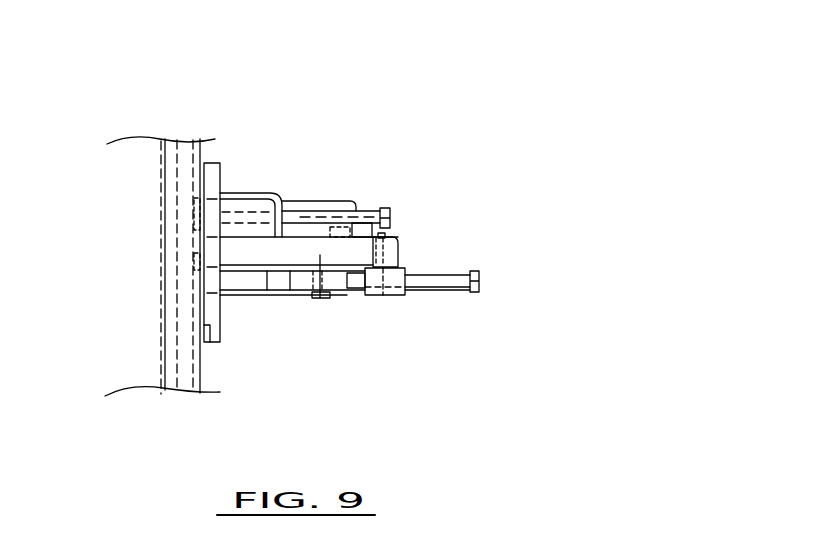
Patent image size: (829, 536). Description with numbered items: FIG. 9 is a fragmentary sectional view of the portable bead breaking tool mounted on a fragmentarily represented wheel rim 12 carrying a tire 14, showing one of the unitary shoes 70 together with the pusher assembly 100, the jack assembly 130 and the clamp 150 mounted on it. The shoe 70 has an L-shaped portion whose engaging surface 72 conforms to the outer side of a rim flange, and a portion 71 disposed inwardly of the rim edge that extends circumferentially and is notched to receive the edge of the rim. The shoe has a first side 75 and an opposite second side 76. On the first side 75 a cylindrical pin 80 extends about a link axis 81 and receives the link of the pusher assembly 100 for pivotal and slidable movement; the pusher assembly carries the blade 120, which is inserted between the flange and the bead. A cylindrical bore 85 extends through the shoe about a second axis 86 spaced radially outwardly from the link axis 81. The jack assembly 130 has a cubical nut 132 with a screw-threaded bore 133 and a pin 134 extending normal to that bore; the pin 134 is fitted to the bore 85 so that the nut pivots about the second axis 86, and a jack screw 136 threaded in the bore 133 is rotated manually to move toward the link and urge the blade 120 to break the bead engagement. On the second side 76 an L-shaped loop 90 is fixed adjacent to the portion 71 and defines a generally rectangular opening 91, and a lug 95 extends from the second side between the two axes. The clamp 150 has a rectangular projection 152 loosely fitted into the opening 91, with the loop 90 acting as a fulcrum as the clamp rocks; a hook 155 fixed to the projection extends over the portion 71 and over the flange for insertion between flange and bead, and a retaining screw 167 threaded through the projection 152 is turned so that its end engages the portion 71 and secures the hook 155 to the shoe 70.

The wheel rim 12 is at (122, 139).
The tire 14 is at (187, 173).
The hook 155 is at (195, 217).
The blade 120 is at (195, 268).
The engaging surface 72 is at (207, 326).
The portion 71 is at (213, 327).
The rectangular opening 91 is at (237, 198).
The projection 152 is at (258, 207).
The L-shaped loop 90 is at (285, 195).
The clamp 150 is at (339, 190).
The second side 76 is at (317, 237).
The retaining screw 167 is at (362, 218).
The lug 95 is at (372, 230).
The cylindrical bore 85 is at (392, 227).
The shoe 70 is at (403, 243).
The pusher assembly 100 is at (253, 296).
The cylindrical pin 80 is at (315, 300).
The first side 75 is at (340, 297).
The link axis 81 is at (317, 296).
The nut 132 is at (343, 298).
The second axis 86 is at (367, 296).
The screw-threaded bore 133 is at (407, 292).
The jack assembly 130 is at (422, 292).
The pin 134 is at (406, 258).
The jack screw 136 is at (433, 289).